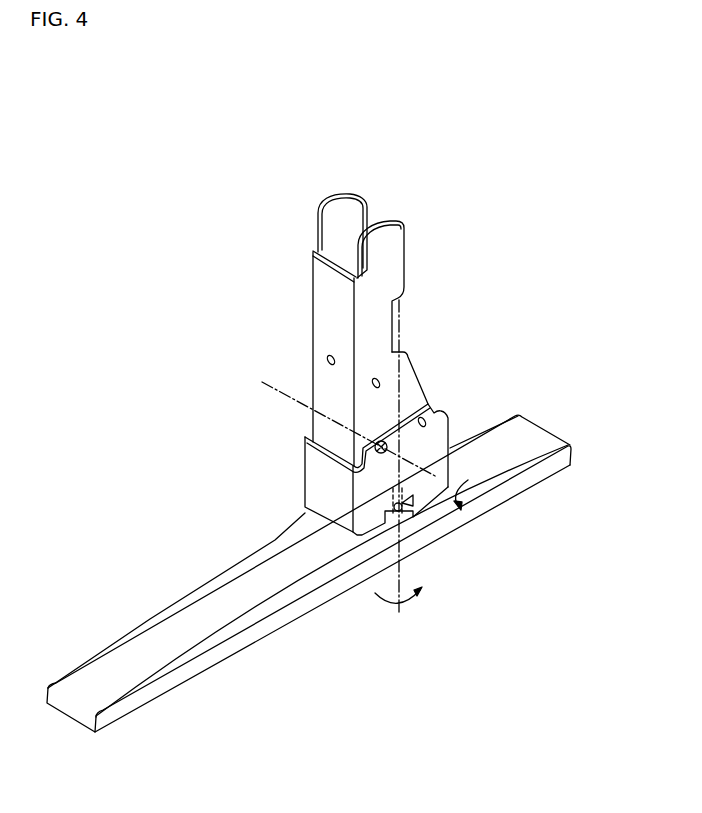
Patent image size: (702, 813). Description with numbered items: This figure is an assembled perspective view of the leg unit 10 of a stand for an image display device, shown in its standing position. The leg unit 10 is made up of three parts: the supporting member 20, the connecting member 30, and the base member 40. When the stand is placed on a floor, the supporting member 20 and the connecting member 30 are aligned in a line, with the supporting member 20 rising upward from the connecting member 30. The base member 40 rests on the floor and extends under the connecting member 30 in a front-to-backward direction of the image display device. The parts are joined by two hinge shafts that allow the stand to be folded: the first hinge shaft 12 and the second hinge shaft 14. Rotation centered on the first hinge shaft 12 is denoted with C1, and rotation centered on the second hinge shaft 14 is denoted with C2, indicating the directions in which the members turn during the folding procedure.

The leg unit 10 is at (450, 158).
The first hinge shaft 12 is at (388, 447).
The second hinge shaft 14 is at (410, 517).
The supporting member 20 is at (390, 262).
The connecting member 30 is at (435, 437).
The base member 40 is at (535, 438).
The rotation centered on the first hinge shaft C1 is at (460, 491).
The rotation centered on the second hinge shaft C2 is at (398, 613).